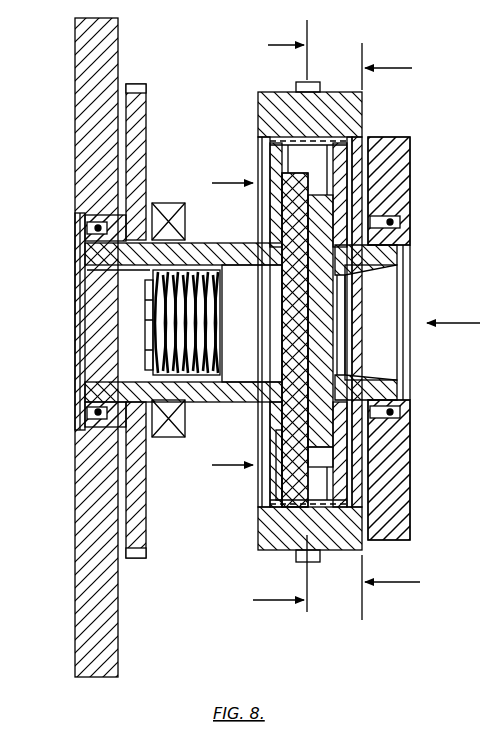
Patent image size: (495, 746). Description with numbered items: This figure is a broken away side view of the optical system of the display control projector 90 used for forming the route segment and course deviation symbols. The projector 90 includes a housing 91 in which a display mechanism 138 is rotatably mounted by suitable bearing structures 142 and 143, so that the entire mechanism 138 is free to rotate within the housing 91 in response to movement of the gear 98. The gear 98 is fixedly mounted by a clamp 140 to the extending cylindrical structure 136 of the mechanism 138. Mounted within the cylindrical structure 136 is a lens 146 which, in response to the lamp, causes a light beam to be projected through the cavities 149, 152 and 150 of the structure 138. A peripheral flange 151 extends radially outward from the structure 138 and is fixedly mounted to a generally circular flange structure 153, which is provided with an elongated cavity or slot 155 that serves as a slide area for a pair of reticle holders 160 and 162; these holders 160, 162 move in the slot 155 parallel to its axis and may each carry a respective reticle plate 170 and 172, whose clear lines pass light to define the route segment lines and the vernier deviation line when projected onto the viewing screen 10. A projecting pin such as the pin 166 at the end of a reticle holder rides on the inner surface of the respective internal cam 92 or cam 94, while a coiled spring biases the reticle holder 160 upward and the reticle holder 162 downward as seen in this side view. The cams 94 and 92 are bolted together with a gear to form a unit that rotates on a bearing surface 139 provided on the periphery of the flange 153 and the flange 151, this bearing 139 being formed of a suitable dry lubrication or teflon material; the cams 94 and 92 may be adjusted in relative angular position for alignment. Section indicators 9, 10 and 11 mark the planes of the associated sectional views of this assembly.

The housing 91 is at (104, 52).
The gear 98 is at (137, 558).
The display control projector 90 is at (72, 357).
The bearing structure 142 is at (105, 222).
The clamp 140 is at (175, 437).
The display mechanism 138 is at (205, 245).
The extending structure 136 is at (222, 390).
The cavity 152 is at (235, 272).
The cavity 150 is at (142, 318).
The lens 146 is at (155, 288).
The bearing surface 139 is at (266, 112).
The internal cam 94 is at (260, 127).
The circular flange structure 153 is at (270, 150).
The projecting pin 166 is at (357, 198).
The internal cam 92 is at (358, 168).
The bearing structure 143 is at (396, 222).
The reticle plate 172 is at (288, 312).
The reticle plate 170 is at (340, 333).
The peripheral flange 151 is at (352, 265).
The elongated cavity or slot 155 is at (342, 377).
The cavity 149 is at (388, 305).
The reticle holder 160 is at (276, 462).
The reticle holder 162 is at (330, 458).
The section line 9 is at (280, 320).
The viewing screen 10 is at (391, 331).
The section line 11 is at (232, 181).